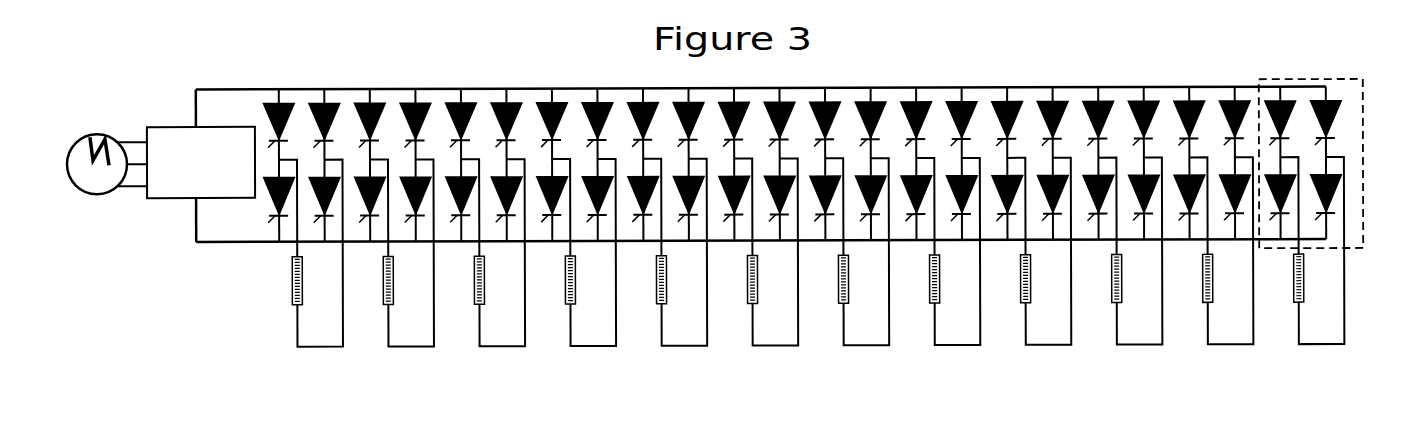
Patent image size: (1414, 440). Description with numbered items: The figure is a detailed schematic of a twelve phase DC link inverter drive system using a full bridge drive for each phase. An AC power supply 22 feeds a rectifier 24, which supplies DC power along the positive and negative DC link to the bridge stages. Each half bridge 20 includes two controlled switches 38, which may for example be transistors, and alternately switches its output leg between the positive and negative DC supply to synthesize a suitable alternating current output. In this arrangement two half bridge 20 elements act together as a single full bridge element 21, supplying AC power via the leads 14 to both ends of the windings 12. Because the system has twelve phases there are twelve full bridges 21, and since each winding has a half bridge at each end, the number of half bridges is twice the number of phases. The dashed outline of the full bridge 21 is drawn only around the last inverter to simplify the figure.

The windings 12 is at (290, 277).
The leads 14 is at (290, 232).
The half bridge 20 is at (1330, 98).
The full bridge element 21 is at (1273, 76).
The AC power supply 22 is at (93, 123).
The rectifier 24 is at (158, 126).
The controlled switches 38 is at (1343, 179).